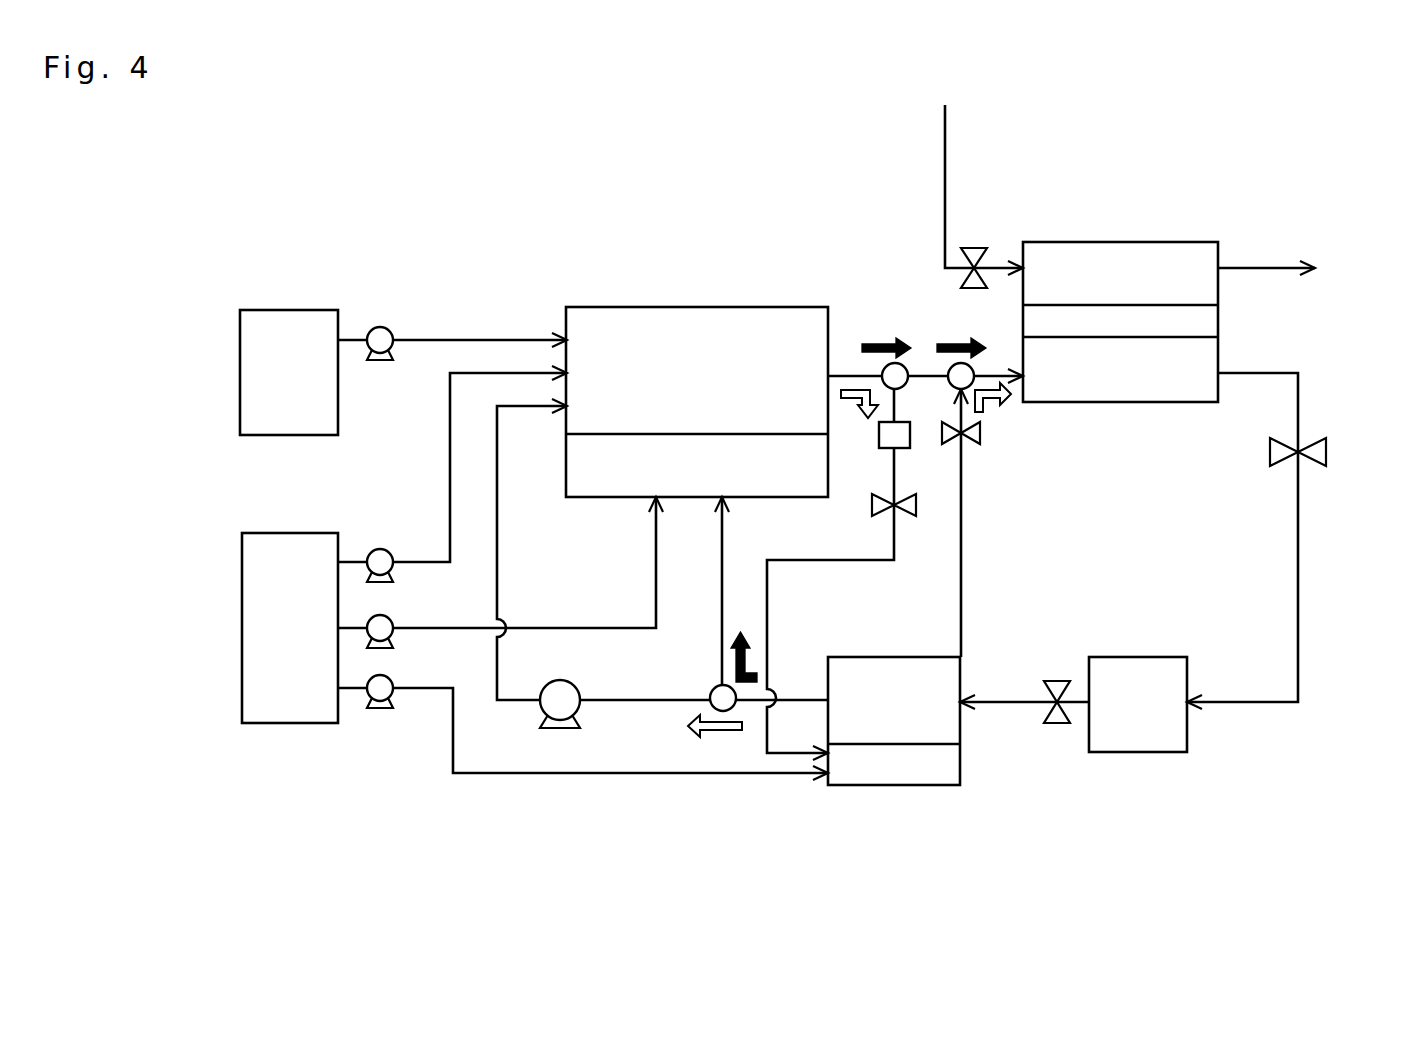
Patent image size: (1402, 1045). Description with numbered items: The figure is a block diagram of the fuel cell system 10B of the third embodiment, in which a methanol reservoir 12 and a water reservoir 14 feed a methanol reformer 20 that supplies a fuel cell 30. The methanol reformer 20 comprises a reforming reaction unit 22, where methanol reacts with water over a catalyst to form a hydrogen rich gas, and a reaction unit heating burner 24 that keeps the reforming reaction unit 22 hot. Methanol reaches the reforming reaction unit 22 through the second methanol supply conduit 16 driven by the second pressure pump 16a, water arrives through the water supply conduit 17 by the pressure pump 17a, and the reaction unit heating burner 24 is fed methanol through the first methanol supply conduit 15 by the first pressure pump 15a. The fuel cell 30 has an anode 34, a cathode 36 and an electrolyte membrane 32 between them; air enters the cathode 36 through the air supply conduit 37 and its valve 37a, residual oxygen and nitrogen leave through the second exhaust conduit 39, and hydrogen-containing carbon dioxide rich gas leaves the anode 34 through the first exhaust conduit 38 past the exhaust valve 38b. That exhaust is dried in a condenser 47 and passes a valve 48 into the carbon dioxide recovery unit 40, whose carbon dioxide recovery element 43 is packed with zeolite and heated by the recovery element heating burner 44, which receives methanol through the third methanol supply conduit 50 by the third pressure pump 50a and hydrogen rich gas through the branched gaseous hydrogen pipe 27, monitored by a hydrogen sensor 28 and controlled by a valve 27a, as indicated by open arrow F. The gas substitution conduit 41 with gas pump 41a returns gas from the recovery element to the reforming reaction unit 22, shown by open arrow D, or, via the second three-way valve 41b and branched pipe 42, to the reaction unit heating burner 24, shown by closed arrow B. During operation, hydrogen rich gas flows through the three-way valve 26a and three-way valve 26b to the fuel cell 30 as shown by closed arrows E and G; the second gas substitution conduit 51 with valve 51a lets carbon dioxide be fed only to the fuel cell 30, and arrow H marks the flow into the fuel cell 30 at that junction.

The fuel cell system 10B is at (576, 185).
The methanol reservoir 12 is at (290, 723).
The water reservoir 14 is at (302, 310).
The first methanol supply conduit 15 is at (533, 626).
The first pressure pump 15a is at (385, 615).
The second methanol supply conduit 16 is at (450, 430).
The second pressure pump 16a is at (378, 549).
The water supply conduit 17 is at (461, 338).
The pressure pump 17a is at (382, 327).
The methanol reformer 20 is at (725, 307).
The reforming reaction unit 22 is at (604, 330).
The reaction unit heating burner 24 is at (767, 487).
The three-way valve 26a is at (905, 386).
The three-way valve 26b is at (977, 360).
The branched gaseous hydrogen pipe 27 is at (812, 565).
The valve 27a is at (915, 510).
The hydrogen sensor 28 is at (877, 446).
The fuel cell 30 is at (1072, 403).
The electrolyte membrane 32 is at (1205, 320).
The anode 34 is at (1160, 393).
The cathode 36 is at (1142, 253).
The air supply conduit 37 is at (948, 155).
The valve 37a is at (977, 248).
The first exhaust conduit 38 is at (1300, 370).
The exhaust valve 38b is at (1330, 445).
The second exhaust conduit 39 is at (1267, 267).
The carbon dioxide recovery unit 40 is at (970, 672).
The gas substitution conduit 41 is at (498, 523).
The gas pump 41a is at (542, 710).
The second three-way valve 41b is at (712, 690).
The branched pipe 42 is at (717, 573).
The carbon dioxide recovery element 43 is at (870, 667).
The recovery element heating burner 44 is at (905, 782).
The condenser 47 is at (1147, 657).
The valve 48 is at (1052, 682).
The third methanol supply conduit 50 is at (560, 775).
The third pressure pump 50a is at (388, 676).
The second gas substitution conduit 51 is at (965, 555).
The valve 51a is at (985, 440).
The closed arrow B is at (743, 655).
The open arrow D is at (720, 731).
The closed arrow E is at (882, 340).
The open arrow F is at (849, 389).
The closed arrow G is at (952, 340).
The flow direction H is at (996, 413).